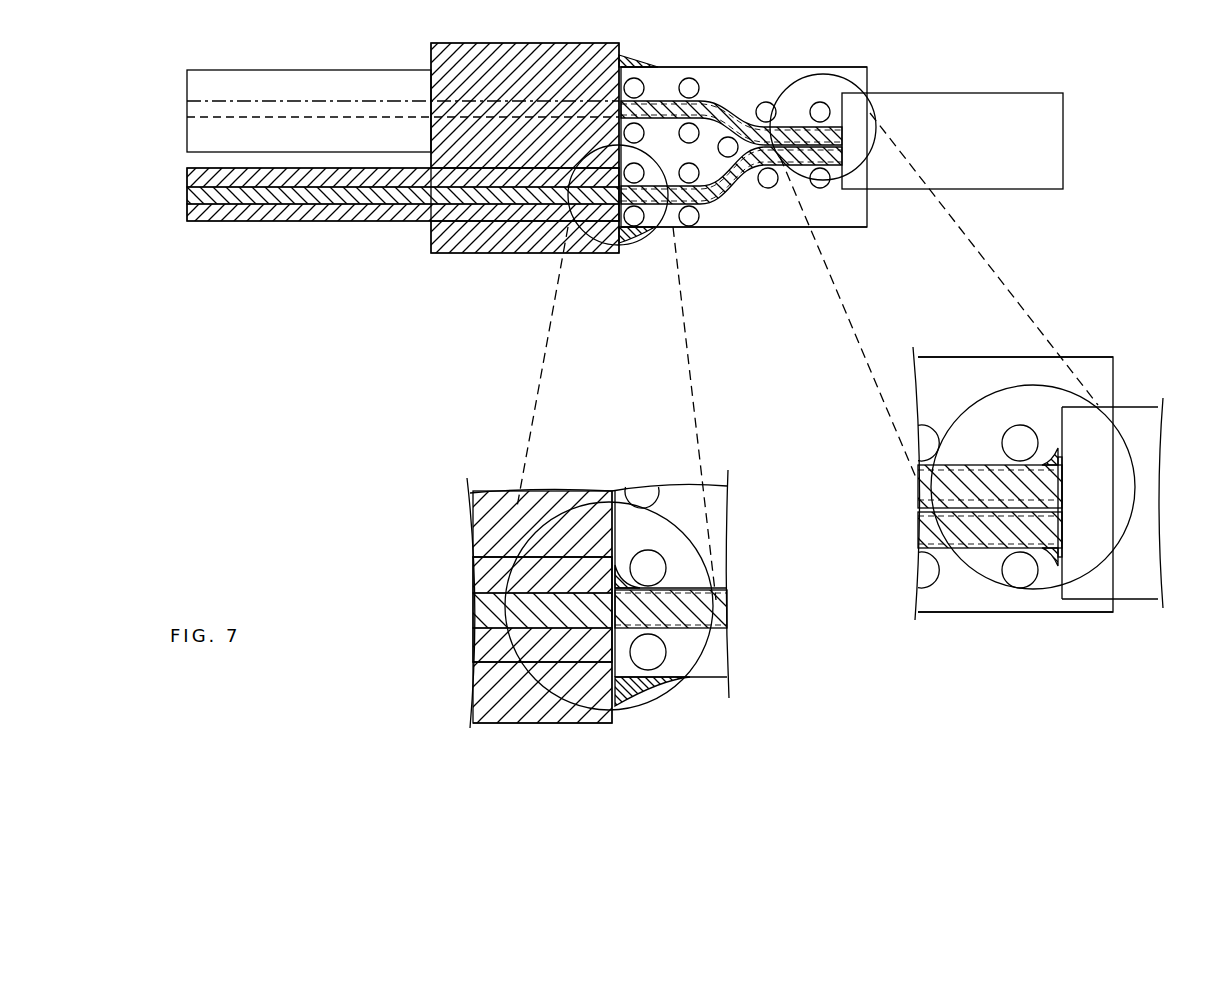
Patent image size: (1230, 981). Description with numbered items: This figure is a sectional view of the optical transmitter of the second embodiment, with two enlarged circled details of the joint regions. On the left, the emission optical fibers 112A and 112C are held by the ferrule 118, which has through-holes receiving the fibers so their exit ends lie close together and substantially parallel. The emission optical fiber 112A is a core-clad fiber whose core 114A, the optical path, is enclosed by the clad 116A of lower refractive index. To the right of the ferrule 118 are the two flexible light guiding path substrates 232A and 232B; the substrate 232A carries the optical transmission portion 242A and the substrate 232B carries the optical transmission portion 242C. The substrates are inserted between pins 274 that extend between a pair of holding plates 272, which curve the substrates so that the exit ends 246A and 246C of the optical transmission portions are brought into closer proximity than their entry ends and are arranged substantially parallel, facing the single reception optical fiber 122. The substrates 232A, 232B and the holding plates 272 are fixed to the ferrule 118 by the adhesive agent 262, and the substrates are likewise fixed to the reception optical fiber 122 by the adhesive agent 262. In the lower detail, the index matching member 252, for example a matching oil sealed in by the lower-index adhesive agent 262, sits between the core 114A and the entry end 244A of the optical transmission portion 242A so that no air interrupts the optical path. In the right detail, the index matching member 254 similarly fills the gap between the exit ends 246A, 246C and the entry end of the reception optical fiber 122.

The emission optical fiber 112C is at (327, 76).
The ferrule 118 is at (480, 43).
The emission optical fiber 112A is at (240, 277).
The core 114A is at (258, 198).
The clad 116A is at (318, 212).
The holding plate 272 is at (791, 73).
The flexible light guiding path substrate 232B is at (663, 100).
The flexible light guiding path substrate 232A is at (708, 226).
The optical transmission portion 242C is at (736, 128).
The optical transmission portion 242A is at (747, 207).
The reception optical fiber 122 is at (999, 93).
The adhesive agent 262 is at (624, 246).
The entry end 244A is at (727, 607).
The index matching member 252 is at (613, 705).
The pin 274 is at (657, 658).
The exit end 246C is at (1018, 483).
The exit end 246A is at (992, 532).
The index matching member 254 is at (1062, 512).